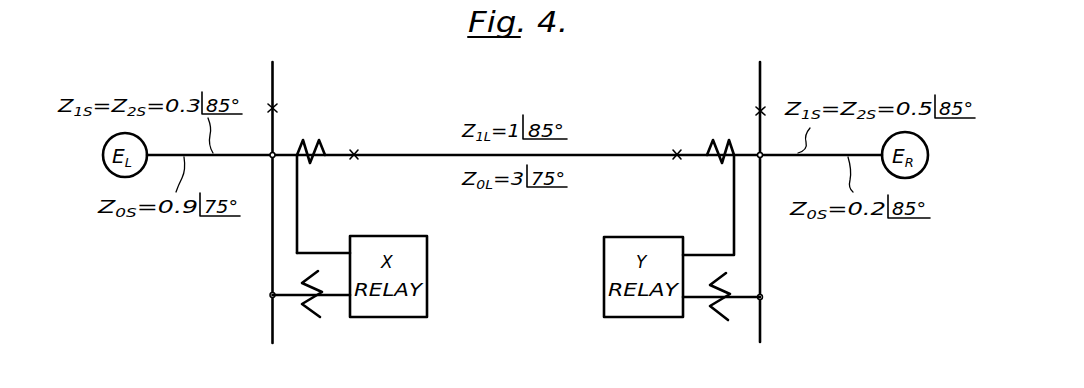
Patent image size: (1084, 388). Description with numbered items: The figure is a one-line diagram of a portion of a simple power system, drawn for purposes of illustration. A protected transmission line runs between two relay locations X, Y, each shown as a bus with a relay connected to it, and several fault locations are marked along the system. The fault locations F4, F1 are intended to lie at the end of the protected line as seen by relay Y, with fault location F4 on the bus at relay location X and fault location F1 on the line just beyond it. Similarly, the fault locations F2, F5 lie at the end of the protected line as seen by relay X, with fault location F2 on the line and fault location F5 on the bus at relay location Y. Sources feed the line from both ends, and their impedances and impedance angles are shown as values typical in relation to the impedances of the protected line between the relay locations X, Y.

The fault location F1 is at (356, 148).
The fault location F2 is at (677, 150).
The fault location F4 is at (278, 104).
The fault location F5 is at (758, 110).
The relay location X is at (271, 214).
The relay location Y is at (759, 214).